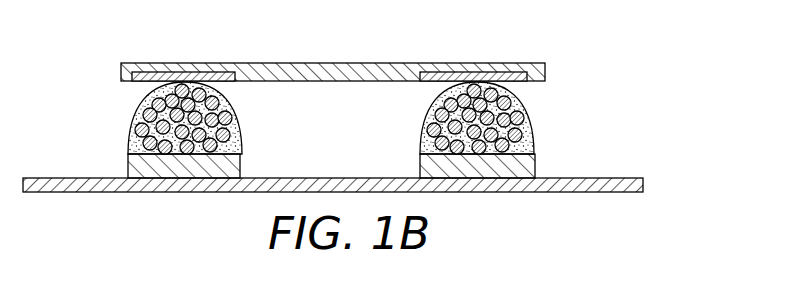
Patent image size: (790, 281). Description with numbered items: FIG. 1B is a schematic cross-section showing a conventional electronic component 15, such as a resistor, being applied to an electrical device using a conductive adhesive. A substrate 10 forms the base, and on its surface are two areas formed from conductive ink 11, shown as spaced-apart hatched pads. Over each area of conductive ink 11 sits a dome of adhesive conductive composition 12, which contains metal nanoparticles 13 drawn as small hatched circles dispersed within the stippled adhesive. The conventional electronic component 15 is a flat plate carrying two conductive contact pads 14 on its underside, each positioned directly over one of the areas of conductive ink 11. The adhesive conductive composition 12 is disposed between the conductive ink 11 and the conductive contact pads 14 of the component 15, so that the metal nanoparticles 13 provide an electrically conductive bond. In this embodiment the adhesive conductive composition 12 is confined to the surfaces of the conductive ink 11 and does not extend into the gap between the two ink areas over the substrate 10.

The substrate 10 is at (324, 178).
The area formed from conductive ink 11 is at (128, 163).
The adhesive conductive composition 12 is at (433, 117).
The metal nanoparticles 13 is at (517, 116).
The conductive contact pad 14 is at (205, 76).
The conventional electronic component 15 is at (339, 63).